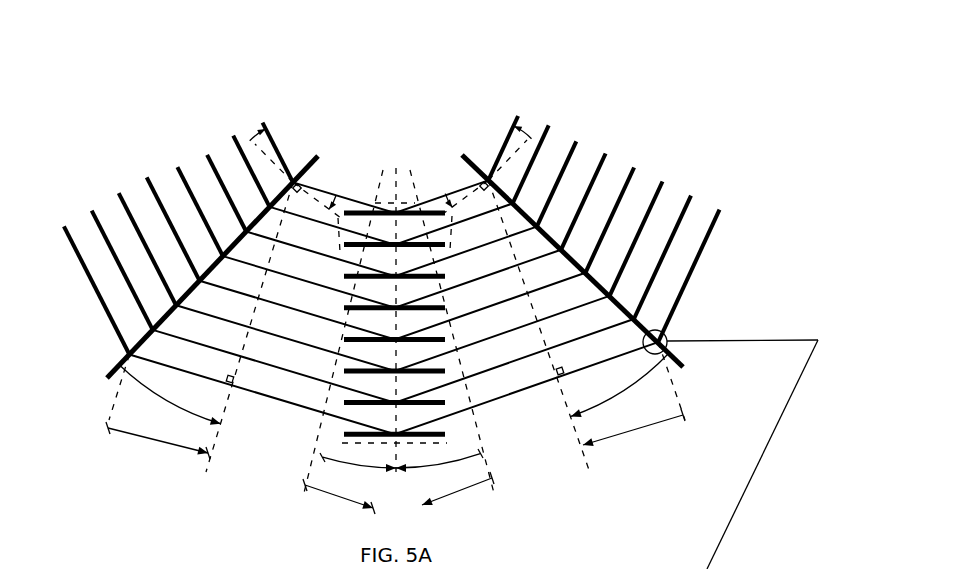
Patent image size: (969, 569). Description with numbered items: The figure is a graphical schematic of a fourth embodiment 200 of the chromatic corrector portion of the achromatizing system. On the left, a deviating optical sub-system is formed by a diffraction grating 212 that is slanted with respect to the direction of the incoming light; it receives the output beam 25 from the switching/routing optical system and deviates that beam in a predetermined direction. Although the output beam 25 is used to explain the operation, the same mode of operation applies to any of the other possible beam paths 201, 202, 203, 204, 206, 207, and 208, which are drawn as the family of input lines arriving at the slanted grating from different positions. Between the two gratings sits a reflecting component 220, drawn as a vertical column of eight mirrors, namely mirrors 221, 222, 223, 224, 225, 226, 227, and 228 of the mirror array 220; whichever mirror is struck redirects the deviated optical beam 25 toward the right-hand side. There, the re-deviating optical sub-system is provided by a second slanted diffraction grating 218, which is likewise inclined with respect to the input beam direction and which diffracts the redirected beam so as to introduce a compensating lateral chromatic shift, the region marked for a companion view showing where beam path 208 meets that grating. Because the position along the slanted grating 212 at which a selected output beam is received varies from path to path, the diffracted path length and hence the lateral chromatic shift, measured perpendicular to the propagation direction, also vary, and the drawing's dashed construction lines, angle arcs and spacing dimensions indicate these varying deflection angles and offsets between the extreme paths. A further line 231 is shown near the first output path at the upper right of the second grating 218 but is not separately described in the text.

The fourth embodiment of the chromatic corrector 200 is at (80, 98).
The beam path 201 is at (305, 148).
The beam path 202 is at (240, 137).
The beam path 203 is at (210, 158).
The beam path 204 is at (154, 190).
The output beam 25 is at (181, 173).
The beam path 206 is at (126, 206).
The beam path 207 is at (101, 223).
The beam path 208 is at (82, 262).
The diffraction grating 212 is at (320, 172).
The diffraction grating 218 is at (467, 172).
The reflecting component 220 is at (380, 198).
The mirror 221 is at (342, 234).
The mirror 222 is at (445, 246).
The mirror 223 is at (445, 278).
The mirror 224 is at (445, 310).
The mirror 225 is at (445, 341).
The mirror 226 is at (445, 373).
The mirror 227 is at (445, 405).
The mirror 228 is at (440, 438).
The output beam 1 231 is at (508, 141).